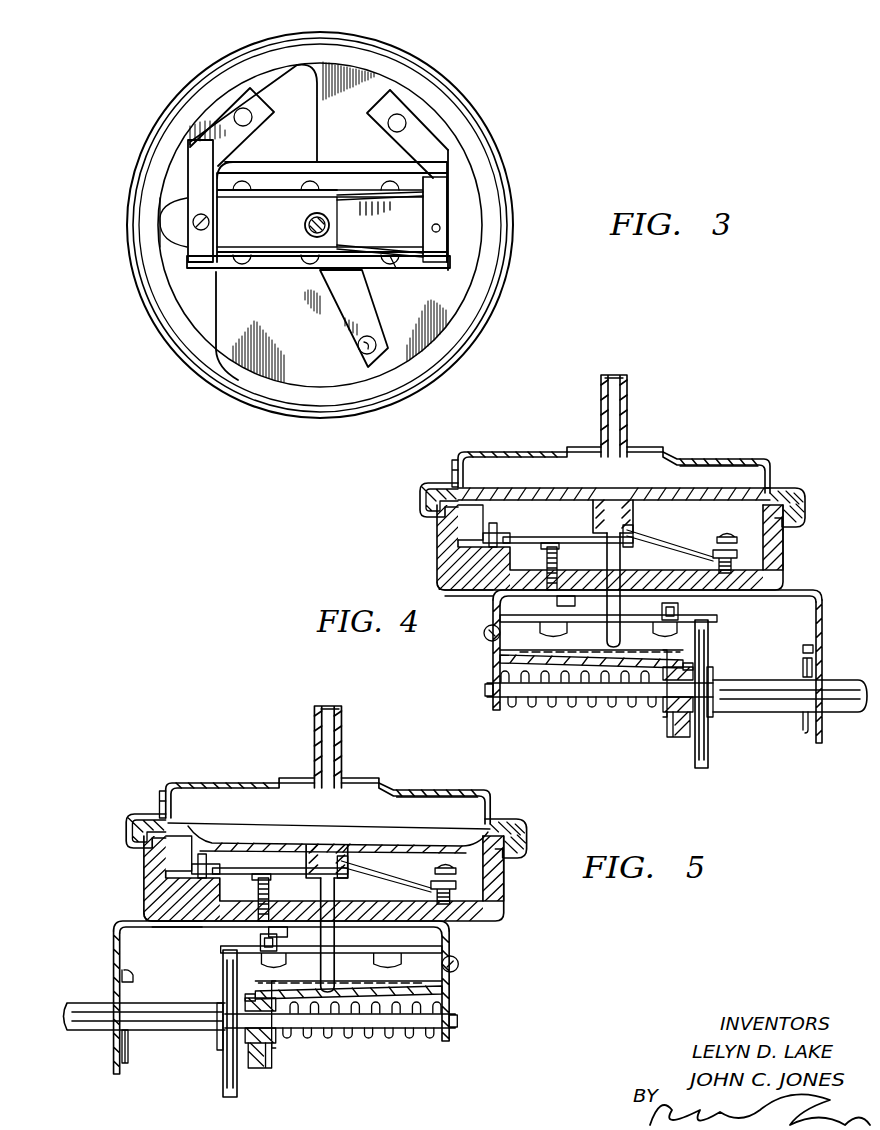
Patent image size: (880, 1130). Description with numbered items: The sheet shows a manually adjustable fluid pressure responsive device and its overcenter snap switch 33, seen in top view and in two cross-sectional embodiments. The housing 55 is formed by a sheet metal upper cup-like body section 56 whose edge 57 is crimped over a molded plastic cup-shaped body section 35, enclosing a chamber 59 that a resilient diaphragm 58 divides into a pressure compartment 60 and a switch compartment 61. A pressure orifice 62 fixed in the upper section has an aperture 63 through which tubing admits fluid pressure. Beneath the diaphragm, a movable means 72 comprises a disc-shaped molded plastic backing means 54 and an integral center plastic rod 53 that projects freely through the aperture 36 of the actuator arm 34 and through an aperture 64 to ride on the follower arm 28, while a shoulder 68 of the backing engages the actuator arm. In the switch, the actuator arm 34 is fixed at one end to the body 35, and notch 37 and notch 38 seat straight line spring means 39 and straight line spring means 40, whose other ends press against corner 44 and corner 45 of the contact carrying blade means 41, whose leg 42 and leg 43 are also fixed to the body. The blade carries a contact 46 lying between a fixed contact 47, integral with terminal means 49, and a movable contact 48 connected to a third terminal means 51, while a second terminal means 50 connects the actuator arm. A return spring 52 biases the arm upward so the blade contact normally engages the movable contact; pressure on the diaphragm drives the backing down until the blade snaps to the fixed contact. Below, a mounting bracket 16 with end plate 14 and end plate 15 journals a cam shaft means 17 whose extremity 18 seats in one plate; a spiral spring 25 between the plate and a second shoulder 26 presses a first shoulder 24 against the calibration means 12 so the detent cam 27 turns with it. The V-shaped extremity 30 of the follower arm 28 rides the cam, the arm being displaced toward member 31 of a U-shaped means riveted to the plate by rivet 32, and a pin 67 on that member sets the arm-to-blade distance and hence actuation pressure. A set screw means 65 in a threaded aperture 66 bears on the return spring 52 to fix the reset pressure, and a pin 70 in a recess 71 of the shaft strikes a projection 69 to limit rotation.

In FIG. 4, the calibration means 12 is at (708, 750).
In FIG. 5, the calibration means 12 is at (230, 1075).
In FIG. 4, the end plate 14 is at (493, 669).
In FIG. 5, the end plate 14 is at (445, 986).
In FIG. 4, the end plate 15 is at (823, 636).
In FIG. 5, the end plate 15 is at (117, 1002).
In FIG. 4, the mounting bracket 16 is at (767, 597).
In FIG. 5, the mounting bracket 16 is at (282, 928).
In FIG. 4, the cam shaft means 17 is at (780, 713).
In FIG. 5, the cam shaft means 17 is at (180, 1031).
In FIG. 4, the extremity of the cam shaft 18 is at (487, 690).
In FIG. 5, the extremity of the cam shaft 18 is at (445, 1021).
In FIG. 4, the first shoulder 24 is at (690, 736).
In FIG. 5, the first shoulder 24 is at (240, 1055).
In FIG. 4, the spiral spring 25 is at (583, 708).
In FIG. 5, the spiral spring 25 is at (382, 1040).
In FIG. 4, the second shoulder 26 is at (665, 714).
In FIG. 5, the second shoulder 26 is at (267, 1044).
In FIG. 4, the detent cam 27 is at (671, 732).
In FIG. 5, the detent cam 27 is at (258, 1066).
In FIG. 4, the follower arm 28 is at (600, 658).
In FIG. 5, the follower arm 28 is at (385, 992).
In FIG. 4, the V-shaped extremity 30 is at (691, 665).
In FIG. 5, the V-shaped extremity 30 is at (250, 996).
In FIG. 4, the member 31 is at (718, 623).
In FIG. 5, the member 31 is at (223, 948).
In FIG. 4, the rivet 32 is at (488, 638).
In FIG. 5, the rivet 32 is at (449, 970).
In FIG. 3, the overcenter snap switch 33 is at (238, 283).
In FIG. 3, the actuator arm 34 is at (222, 234).
In FIG. 3, the cup-shaped body section 35 is at (272, 80).
In FIG. 4, the cup-shaped body section 35 is at (495, 584).
In FIG. 5, the cup-shaped body section 35 is at (500, 919).
In FIG. 3, the aperture 36 is at (304, 224).
In FIG. 3, the notch 37 is at (345, 199).
In FIG. 3, the notch 38 is at (343, 251).
In FIG. 3, the straight line spring means 39 is at (368, 190).
In FIG. 3, the straight line spring means 40 is at (395, 268).
In FIG. 3, the contact carrying blade means 41 is at (440, 270).
In FIG. 3, the leg 42 is at (308, 185).
In FIG. 3, the leg 43 is at (268, 268).
In FIG. 3, the corner 44 is at (432, 186).
In FIG. 3, the corner 45 is at (452, 262).
In FIG. 4, the contact 46 is at (740, 556).
In FIG. 5, the contact 46 is at (443, 892).
In FIG. 4, the fixed contact 47 is at (726, 540).
In FIG. 5, the fixed contact 47 is at (445, 870).
In FIG. 3, the movable contact 48 is at (376, 236).
In FIG. 4, the movable contact 48 is at (771, 581).
In FIG. 5, the movable contact 48 is at (493, 869).
In FIG. 3, the terminal means 49 is at (383, 120).
In FIG. 3, the second terminal means 50 is at (268, 110).
In FIG. 3, the third terminal means 51 is at (343, 334).
In FIG. 4, the return spring 52 is at (496, 593).
In FIG. 5, the return spring 52 is at (223, 890).
In FIG. 4, the center plastic rod 53 is at (606, 576).
In FIG. 5, the center plastic rod 53 is at (353, 904).
In FIG. 4, the molded plastic backing means 54 is at (615, 498).
In FIG. 5, the molded plastic backing means 54 is at (340, 845).
In FIG. 4, the housing 55 is at (406, 500).
In FIG. 5, the housing 55 is at (530, 841).
In FIG. 4, the upper cup-like body section 56 is at (455, 464).
In FIG. 5, the upper cup-like body section 56 is at (491, 810).
In FIG. 4, the edge 57 is at (420, 519).
In FIG. 5, the edge 57 is at (514, 868).
In FIG. 4, the resilient diaphragm 58 is at (568, 488).
In FIG. 5, the resilient diaphragm 58 is at (307, 843).
In FIG. 4, the chamber 59 is at (492, 475).
In FIG. 5, the chamber 59 is at (237, 807).
In FIG. 4, the pressure compartment 60 is at (692, 483).
In FIG. 5, the pressure compartment 60 is at (412, 820).
In FIG. 4, the switch compartment 61 is at (468, 531).
In FIG. 5, the switch compartment 61 is at (183, 858).
In FIG. 4, the pressure orifice 62 is at (616, 418).
In FIG. 5, the pressure orifice 62 is at (340, 733).
In FIG. 4, the aperture 63 is at (607, 385).
In FIG. 5, the aperture 63 is at (336, 705).
In FIG. 4, the aperture 64 is at (620, 641).
In FIG. 5, the aperture 64 is at (335, 960).
In FIG. 4, the set screw means 65 is at (553, 572).
In FIG. 5, the set screw means 65 is at (451, 926).
In FIG. 4, the threaded aperture 66 is at (566, 601).
In FIG. 5, the threaded aperture 66 is at (278, 932).
In FIG. 4, the pin 67 is at (684, 613).
In FIG. 5, the pin 67 is at (254, 934).
In FIG. 4, the shoulder 68 is at (628, 536).
In FIG. 5, the shoulder 68 is at (336, 862).
In FIG. 4, the projection 69 is at (805, 648).
In FIG. 5, the projection 69 is at (128, 975).
In FIG. 4, the pin 70 is at (801, 669).
In FIG. 5, the pin 70 is at (120, 1047).
In FIG. 4, the recess 71 is at (805, 730).
In FIG. 4, the movable means 72 is at (590, 534).
In FIG. 5, the movable means 72 is at (280, 871).